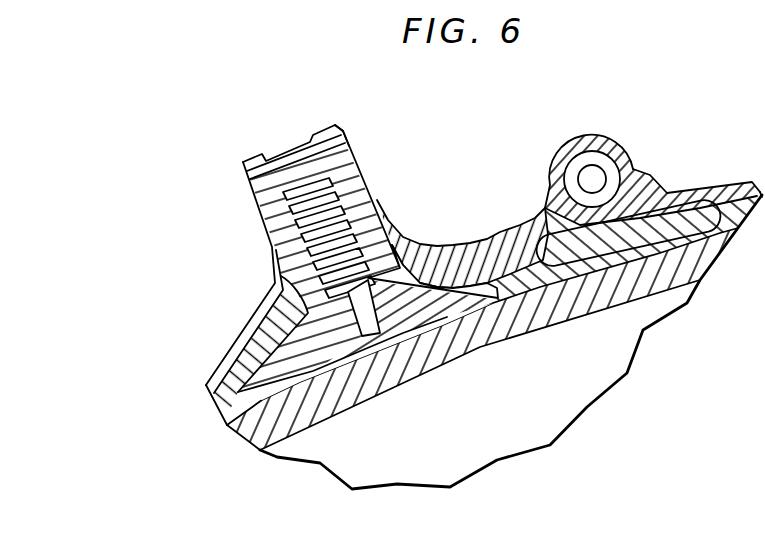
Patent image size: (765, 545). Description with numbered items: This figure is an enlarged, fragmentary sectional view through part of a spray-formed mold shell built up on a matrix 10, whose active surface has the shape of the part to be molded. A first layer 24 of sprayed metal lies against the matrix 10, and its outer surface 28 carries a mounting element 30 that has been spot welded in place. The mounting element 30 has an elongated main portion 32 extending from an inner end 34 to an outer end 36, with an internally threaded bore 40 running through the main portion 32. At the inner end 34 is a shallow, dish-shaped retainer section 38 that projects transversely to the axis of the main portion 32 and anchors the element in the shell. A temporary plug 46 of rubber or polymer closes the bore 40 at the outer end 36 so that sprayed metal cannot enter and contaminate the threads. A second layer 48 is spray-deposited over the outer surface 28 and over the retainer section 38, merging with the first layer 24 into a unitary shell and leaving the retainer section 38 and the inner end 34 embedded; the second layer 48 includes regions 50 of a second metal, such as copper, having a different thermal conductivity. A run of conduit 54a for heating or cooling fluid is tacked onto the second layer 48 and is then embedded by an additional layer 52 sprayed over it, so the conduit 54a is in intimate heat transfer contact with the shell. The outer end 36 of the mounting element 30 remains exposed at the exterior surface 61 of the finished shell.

The matrix 10 is at (331, 438).
The first layer 24 is at (241, 439).
The outer surface of the first layer 28 is at (223, 428).
The mounting element 30 is at (276, 210).
The main portion 32 is at (366, 185).
The inner end 34 is at (402, 282).
The outer end 36 is at (343, 133).
The retainer section 38 is at (467, 279).
The bore 40 is at (289, 211).
The temporary plug 46 is at (285, 152).
The second layer 48 is at (217, 402).
The regions of second metal 50 is at (663, 201).
The additional layer 52 is at (273, 342).
The conduit 54a is at (585, 166).
The exterior surface of the shell 61 is at (720, 183).